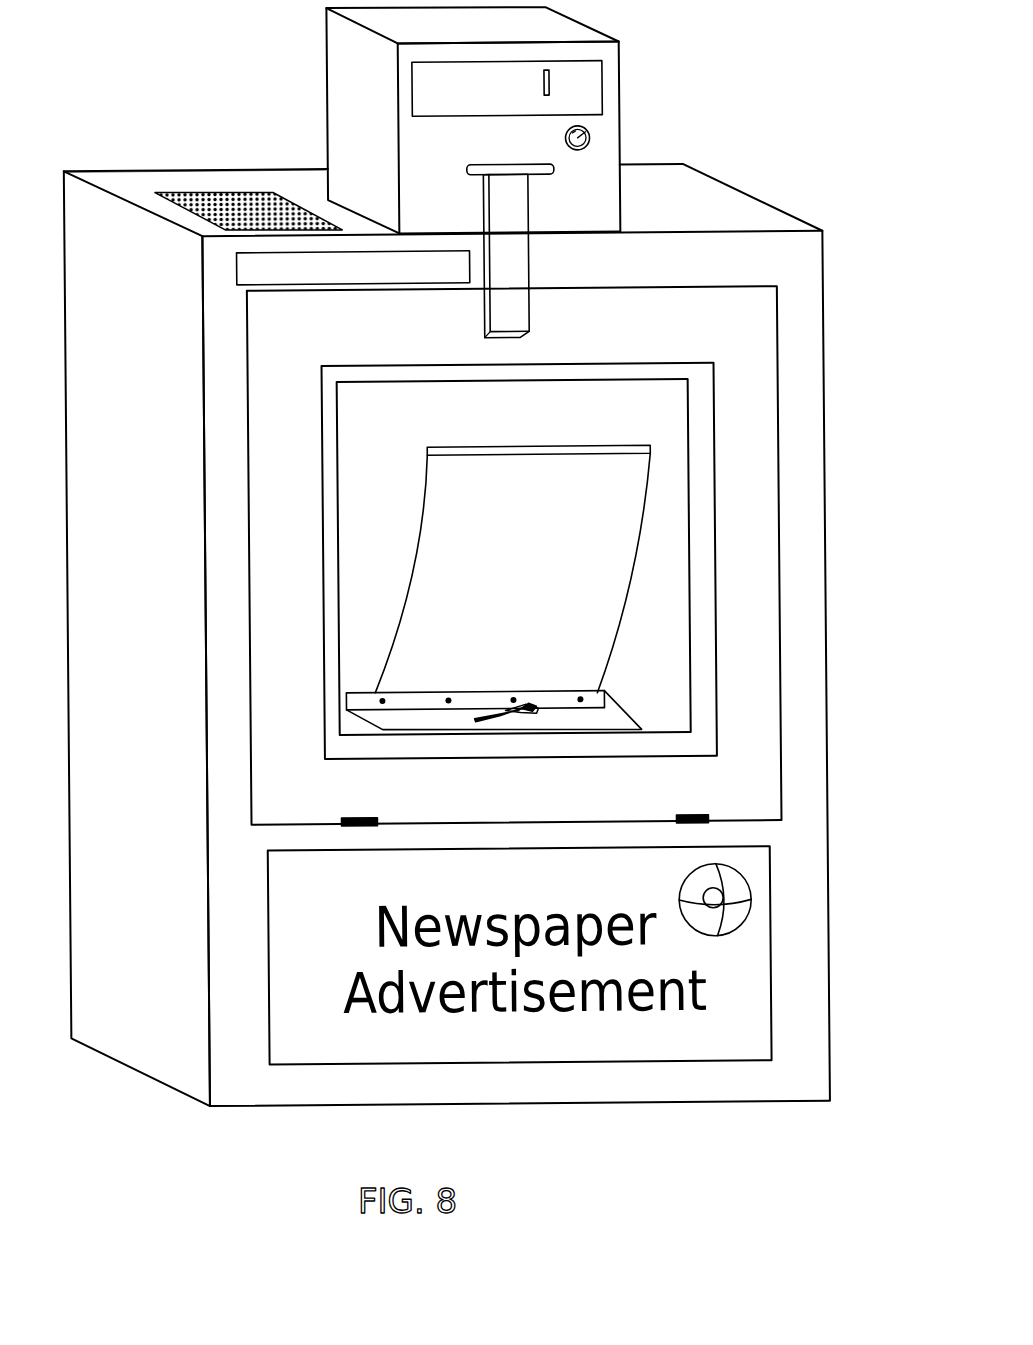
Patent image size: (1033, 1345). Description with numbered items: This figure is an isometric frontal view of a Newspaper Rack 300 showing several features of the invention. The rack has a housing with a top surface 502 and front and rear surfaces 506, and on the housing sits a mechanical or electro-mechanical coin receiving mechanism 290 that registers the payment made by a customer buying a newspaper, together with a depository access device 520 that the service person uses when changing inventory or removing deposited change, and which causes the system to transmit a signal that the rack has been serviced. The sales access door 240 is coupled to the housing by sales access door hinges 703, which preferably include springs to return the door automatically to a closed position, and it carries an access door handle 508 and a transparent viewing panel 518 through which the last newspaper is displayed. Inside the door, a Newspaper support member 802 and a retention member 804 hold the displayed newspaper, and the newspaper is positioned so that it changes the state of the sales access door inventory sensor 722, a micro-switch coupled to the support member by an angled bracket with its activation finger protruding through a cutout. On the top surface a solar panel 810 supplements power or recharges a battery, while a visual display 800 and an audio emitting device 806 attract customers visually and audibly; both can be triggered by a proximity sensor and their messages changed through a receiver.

The Newspaper Rack 300 is at (133, 1114).
The top surface 502 is at (286, 176).
The solar panel 810 is at (249, 191).
The front and rear surfaces 506 is at (716, 252).
The coin receiving mechanism 290 is at (582, 80).
The depository access device 520 is at (595, 129).
The access door handle 508 is at (571, 183).
The visual display 800 is at (343, 284).
The sales access door 240 is at (716, 332).
The transparent viewing panel 518 is at (500, 401).
The retention member 804 is at (505, 473).
The Newspaper support member 802 is at (576, 720).
The sales access door inventory sensor 722 is at (527, 706).
The sales access door hinges 703 is at (363, 814).
The audio emitting device 806 is at (742, 902).